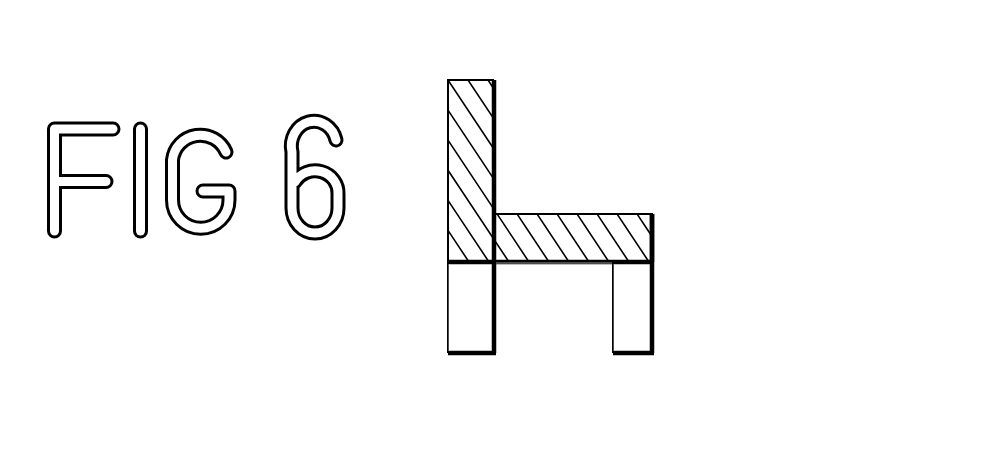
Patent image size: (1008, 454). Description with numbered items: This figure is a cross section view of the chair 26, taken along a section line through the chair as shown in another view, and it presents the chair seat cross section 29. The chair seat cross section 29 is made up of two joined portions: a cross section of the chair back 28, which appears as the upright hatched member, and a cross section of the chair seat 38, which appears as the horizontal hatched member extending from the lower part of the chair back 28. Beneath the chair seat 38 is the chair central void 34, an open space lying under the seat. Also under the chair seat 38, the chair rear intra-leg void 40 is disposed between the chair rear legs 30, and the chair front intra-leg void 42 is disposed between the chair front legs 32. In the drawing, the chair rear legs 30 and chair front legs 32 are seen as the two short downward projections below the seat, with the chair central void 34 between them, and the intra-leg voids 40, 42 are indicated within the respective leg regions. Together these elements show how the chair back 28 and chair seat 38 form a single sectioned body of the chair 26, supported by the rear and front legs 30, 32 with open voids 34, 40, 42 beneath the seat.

The chair 26 is at (748, 90).
The chair back 28 is at (449, 118).
The chair seat cross section 29 is at (655, 224).
The chair rear legs 30 is at (466, 356).
The chair front legs 32 is at (645, 356).
The chair central void 34 is at (556, 324).
The chair seat 38 is at (545, 212).
The chair rear intra-leg void 40 is at (466, 315).
The chair front intra-leg void 42 is at (634, 312).